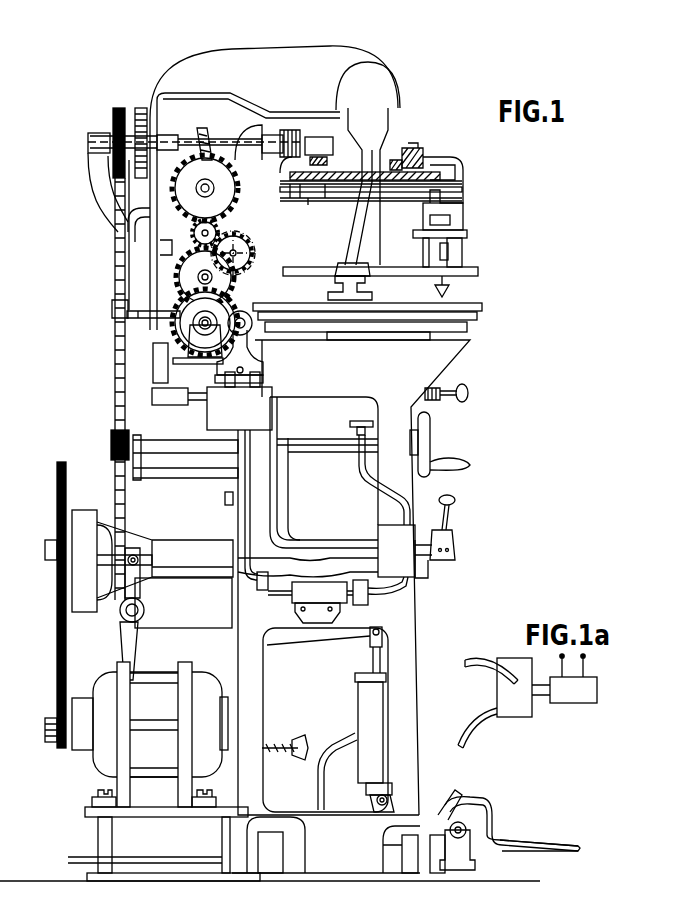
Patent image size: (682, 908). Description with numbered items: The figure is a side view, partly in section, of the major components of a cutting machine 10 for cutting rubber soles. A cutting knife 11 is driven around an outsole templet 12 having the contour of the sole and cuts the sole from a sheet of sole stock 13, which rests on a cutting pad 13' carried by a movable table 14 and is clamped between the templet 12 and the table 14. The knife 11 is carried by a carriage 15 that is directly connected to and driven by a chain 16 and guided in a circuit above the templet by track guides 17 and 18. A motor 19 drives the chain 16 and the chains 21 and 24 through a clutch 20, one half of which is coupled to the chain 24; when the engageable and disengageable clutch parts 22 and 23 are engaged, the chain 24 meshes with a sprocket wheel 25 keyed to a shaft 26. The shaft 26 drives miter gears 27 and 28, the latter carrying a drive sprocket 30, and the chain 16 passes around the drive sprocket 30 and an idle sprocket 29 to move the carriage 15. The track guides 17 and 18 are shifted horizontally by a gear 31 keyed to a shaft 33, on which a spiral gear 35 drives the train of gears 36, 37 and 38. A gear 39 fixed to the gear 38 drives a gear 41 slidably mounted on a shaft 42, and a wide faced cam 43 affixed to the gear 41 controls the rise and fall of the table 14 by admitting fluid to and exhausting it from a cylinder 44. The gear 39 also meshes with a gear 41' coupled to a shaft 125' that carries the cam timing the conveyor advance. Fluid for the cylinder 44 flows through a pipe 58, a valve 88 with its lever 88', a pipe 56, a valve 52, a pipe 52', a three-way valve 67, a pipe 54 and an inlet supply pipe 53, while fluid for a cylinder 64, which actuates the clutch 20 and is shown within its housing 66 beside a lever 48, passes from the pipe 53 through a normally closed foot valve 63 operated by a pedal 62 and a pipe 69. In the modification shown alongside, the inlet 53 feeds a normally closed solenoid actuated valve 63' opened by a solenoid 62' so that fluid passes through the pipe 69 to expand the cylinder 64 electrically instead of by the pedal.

In FIG. 1, the cutting machine 10 is at (210, 49).
In FIG. 1, the cutting knife 11 is at (450, 294).
In FIG. 1, the outsole templet 12 is at (405, 300).
In FIG. 1, the sheet of sole stock 13 is at (387, 300).
In FIG. 1, the cutting pad 13' is at (390, 317).
In FIG. 1, the movable table 14 is at (470, 328).
In FIG. 1, the carriage 15 is at (462, 247).
In FIG. 1, the chain 16 is at (325, 200).
In FIG. 1, the track guide 17 is at (306, 206).
In FIG. 1, the track guide 18 is at (304, 276).
In FIG. 1, the motor 19 is at (100, 760).
In FIG. 1, the clutch 20 is at (98, 520).
In FIG. 1, the chain 21 is at (57, 612).
In FIG. 1, the engageable and disengageable clutch part 22 is at (120, 602).
In FIG. 1, the engageable and disengageable clutch part 23 is at (100, 610).
In FIG. 1, the chain 24 is at (115, 378).
In FIG. 1, the sprocket wheel 25 is at (118, 108).
In FIG. 1, the shaft 26 is at (88, 142).
In FIG. 1, the miter gear 27 is at (300, 142).
In FIG. 1, the miter gear 28 is at (350, 212).
In FIG. 1, the idle sprocket 29 is at (402, 158).
In FIG. 1, the drive sprocket 30 is at (292, 186).
In FIG. 1, the gear 31 is at (141, 108).
In FIG. 1, the shaft 33 is at (193, 135).
In FIG. 1, the spiral gear 35 is at (204, 128).
In FIG. 1, the gear 36 is at (188, 203).
In FIG. 1, the gear 37 is at (192, 235).
In FIG. 1, the gear 38 is at (182, 270).
In FIG. 1, the gear 39 is at (233, 297).
In FIG. 1, the gear 41 is at (103, 389).
In FIG. 1, the gear 41' is at (283, 204).
In FIG. 1, the shaft 42 is at (190, 340).
In FIG. 1, the wide faced cam 43 is at (127, 313).
In FIG. 1, the cylinder 44 is at (352, 421).
In FIG. 1, the lever 48 is at (250, 358).
In FIG. 1, the valve 52 is at (222, 404).
In FIG. 1, the pipe 52' is at (215, 505).
In FIG. 1, the inlet supply pipe 53 is at (68, 858).
In FIG. 1A, the inlet supply pipe 53 is at (486, 726).
In FIG. 1, the pipe 54 is at (318, 779).
In FIG. 1, the pipe 56 is at (289, 500).
In FIG. 1, the pipe 58 is at (359, 470).
In FIG. 1, the pedal 62 is at (540, 836).
In FIG. 1A, the solenoid 62' is at (584, 689).
In FIG. 1, the foot valve 63 is at (511, 822).
In FIG. 1A, the solenoid actuated valve 63' is at (518, 702).
In FIG. 1, the cylinder 64 is at (384, 693).
In FIG. 1, the housing 66 is at (302, 638).
In FIG. 1, the three-way valve 67 is at (293, 598).
In FIG. 1, the pipe 69 is at (436, 796).
In FIG. 1A, the pipe 69 is at (488, 661).
In FIG. 1, the valve 88 is at (377, 544).
In FIG. 1, the valve lever 88' is at (449, 536).
In FIG. 1, the shaft 125' is at (253, 253).